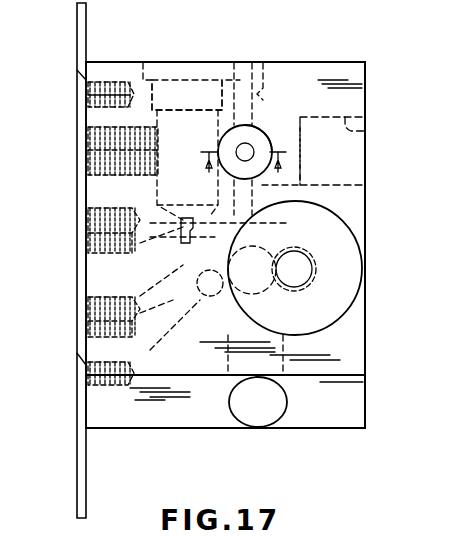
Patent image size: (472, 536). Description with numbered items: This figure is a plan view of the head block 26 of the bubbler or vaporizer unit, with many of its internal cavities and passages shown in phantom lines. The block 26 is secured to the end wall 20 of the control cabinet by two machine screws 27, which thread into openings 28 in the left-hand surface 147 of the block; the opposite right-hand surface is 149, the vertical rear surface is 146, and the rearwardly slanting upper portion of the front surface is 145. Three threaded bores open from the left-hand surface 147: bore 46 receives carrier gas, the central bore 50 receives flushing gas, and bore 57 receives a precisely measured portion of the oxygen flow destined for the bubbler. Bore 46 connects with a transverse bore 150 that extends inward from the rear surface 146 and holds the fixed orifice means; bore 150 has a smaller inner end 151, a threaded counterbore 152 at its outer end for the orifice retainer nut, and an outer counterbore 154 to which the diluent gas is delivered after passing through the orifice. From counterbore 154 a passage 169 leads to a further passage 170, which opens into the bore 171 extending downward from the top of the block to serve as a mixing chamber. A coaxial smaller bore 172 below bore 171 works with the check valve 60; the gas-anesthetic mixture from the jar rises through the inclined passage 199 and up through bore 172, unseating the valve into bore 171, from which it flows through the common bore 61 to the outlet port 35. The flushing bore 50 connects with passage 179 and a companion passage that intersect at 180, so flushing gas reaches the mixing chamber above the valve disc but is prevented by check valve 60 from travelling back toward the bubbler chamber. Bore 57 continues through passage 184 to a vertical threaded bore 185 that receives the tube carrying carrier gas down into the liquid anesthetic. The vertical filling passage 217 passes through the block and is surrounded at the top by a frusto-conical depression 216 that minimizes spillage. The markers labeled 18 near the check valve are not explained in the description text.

The pins 18 is at (241, 177).
The end wall 20 is at (77, 494).
The head block 26 is at (340, 50).
The machine screws 27 is at (86, 106).
The openings 28 is at (86, 88).
The outlet passage 35 is at (366, 141).
The threaded bore 46 is at (86, 158).
The central opening 50 is at (86, 233).
The right-hand passage 57 is at (86, 315).
The check valve 60 is at (255, 128).
The common passage 61 is at (290, 154).
The upper rearwardly slanting portion 145 is at (150, 428).
The rear surface 146 is at (358, 62).
The left-hand surface 147 is at (80, 274).
The right-hand surface 149 is at (364, 212).
The bore 150 is at (152, 186).
The inner end 151 is at (164, 256).
The threaded counterbore 152 is at (160, 97).
The outer counterbore 154 is at (156, 66).
The passage 169 is at (232, 63).
The passage 170 is at (266, 63).
The bore 171 is at (260, 140).
The smaller bore 172 is at (240, 150).
The passage 179 is at (198, 249).
The intersection 180 is at (270, 244).
The passage 184 is at (169, 331).
The vertically extending bore 185 is at (202, 297).
The inclined passage 199 is at (248, 428).
The frusto-conical depression 216 is at (352, 290).
The filling passage 217 is at (291, 288).